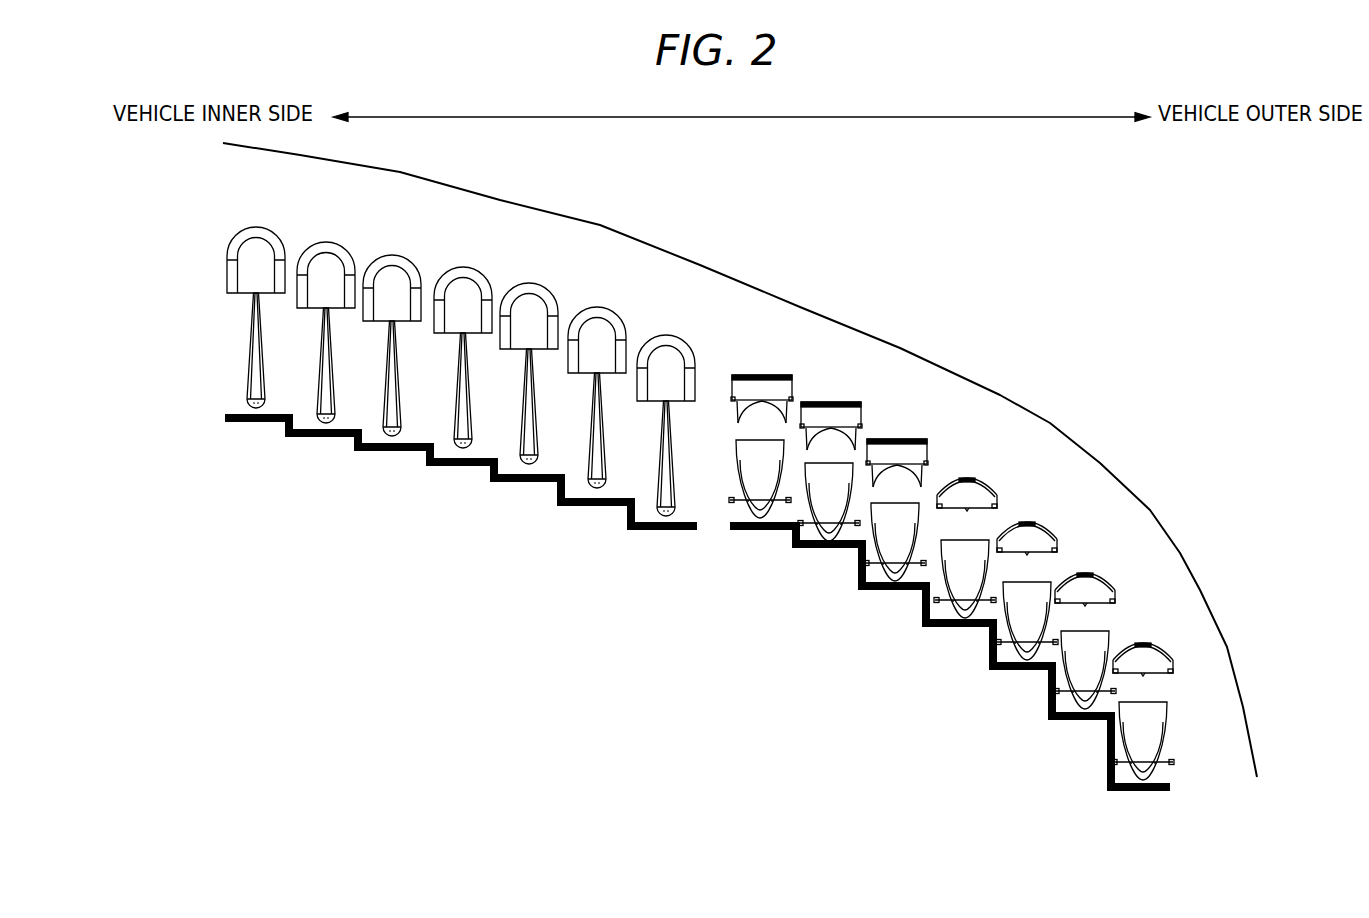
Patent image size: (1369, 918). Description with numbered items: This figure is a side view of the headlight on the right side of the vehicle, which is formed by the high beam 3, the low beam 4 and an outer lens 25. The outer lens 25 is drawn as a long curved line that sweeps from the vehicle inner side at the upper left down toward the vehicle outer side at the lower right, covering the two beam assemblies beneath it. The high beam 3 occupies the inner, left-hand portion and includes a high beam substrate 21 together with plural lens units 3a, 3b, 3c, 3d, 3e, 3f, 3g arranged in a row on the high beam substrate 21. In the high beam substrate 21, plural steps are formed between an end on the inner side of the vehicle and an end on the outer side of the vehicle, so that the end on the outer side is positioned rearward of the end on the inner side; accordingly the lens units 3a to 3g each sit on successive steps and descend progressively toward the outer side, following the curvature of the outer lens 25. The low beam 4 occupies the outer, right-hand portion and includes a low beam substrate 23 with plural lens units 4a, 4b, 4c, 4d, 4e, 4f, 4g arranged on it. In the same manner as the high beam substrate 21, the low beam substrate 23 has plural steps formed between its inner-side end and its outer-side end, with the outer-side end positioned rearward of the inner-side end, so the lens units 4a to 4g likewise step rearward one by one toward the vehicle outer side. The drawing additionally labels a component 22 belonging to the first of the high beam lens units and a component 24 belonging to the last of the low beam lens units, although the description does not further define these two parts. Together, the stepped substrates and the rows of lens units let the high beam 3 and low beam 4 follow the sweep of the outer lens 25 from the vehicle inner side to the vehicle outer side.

The high beam 3 is at (437, 395).
The lens unit 3a is at (232, 283).
The lens unit 3b is at (328, 243).
The lens unit 3c is at (394, 256).
The lens unit 3d is at (465, 268).
The lens unit 3e is at (531, 284).
The lens unit 3f is at (599, 308).
The lens unit 3g is at (668, 336).
The low beam 4 is at (954, 544).
The lens unit 4a is at (764, 374).
The lens unit 4b is at (832, 401).
The lens unit 4c is at (897, 438).
The lens unit 4d is at (969, 477).
The lens unit 4e is at (1028, 521).
The lens unit 4f is at (1086, 572).
The lens unit 4g is at (1118, 678).
The high beam substrate 21 is at (232, 423).
The light guide rod 22 is at (252, 348).
The low beam substrate 23 is at (990, 663).
The reflector of second light source unit 24 is at (1135, 730).
The outer lens 25 is at (742, 277).